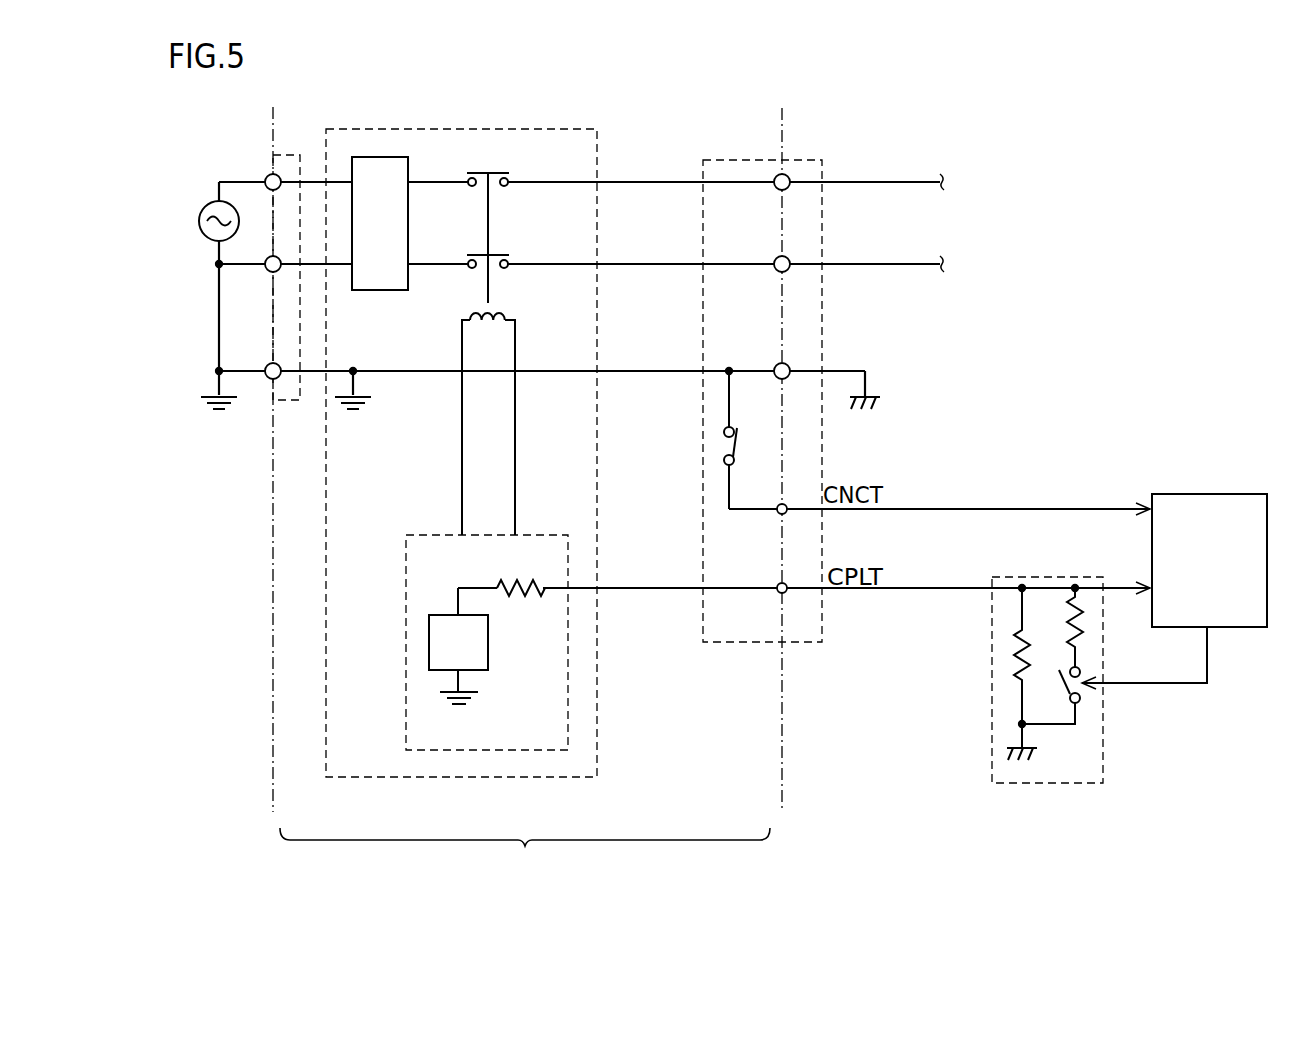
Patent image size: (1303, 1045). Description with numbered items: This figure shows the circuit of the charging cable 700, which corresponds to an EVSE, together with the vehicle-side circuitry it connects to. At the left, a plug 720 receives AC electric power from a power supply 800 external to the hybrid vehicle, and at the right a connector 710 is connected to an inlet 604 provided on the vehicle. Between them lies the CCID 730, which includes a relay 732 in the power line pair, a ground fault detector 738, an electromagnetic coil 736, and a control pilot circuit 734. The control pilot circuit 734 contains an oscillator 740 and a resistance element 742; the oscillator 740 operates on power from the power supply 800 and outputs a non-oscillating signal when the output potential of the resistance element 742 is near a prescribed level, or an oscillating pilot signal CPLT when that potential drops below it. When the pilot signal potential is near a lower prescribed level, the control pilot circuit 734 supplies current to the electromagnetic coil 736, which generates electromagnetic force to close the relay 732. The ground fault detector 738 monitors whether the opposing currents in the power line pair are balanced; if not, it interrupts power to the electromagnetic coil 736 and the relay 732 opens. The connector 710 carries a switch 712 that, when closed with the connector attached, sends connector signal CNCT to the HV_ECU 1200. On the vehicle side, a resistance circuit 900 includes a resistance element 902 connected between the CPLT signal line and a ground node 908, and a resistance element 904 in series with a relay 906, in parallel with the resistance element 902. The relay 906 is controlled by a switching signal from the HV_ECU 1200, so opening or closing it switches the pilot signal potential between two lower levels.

The power supply 800 is at (204, 204).
The plug 720 is at (289, 155).
The CCID 730 is at (430, 128).
The relay 732 is at (488, 162).
The ground fault detector 738 is at (383, 292).
The electromagnetic coil 736 is at (502, 310).
The control pilot circuit 734 is at (437, 535).
The oscillator 740 is at (429, 636).
The resistance element 742 is at (522, 597).
The connector 710 is at (748, 160).
The inlet 604 is at (806, 160).
The switch 712 is at (724, 441).
The charging cable 700 is at (525, 852).
The HV_ECU 1200 is at (1245, 629).
The resistance circuit 900 is at (992, 718).
The resistance element 902 is at (1008, 658).
The resistance element 904 is at (1092, 628).
The relay 906 is at (1061, 692).
The ground node 908 is at (1025, 772).